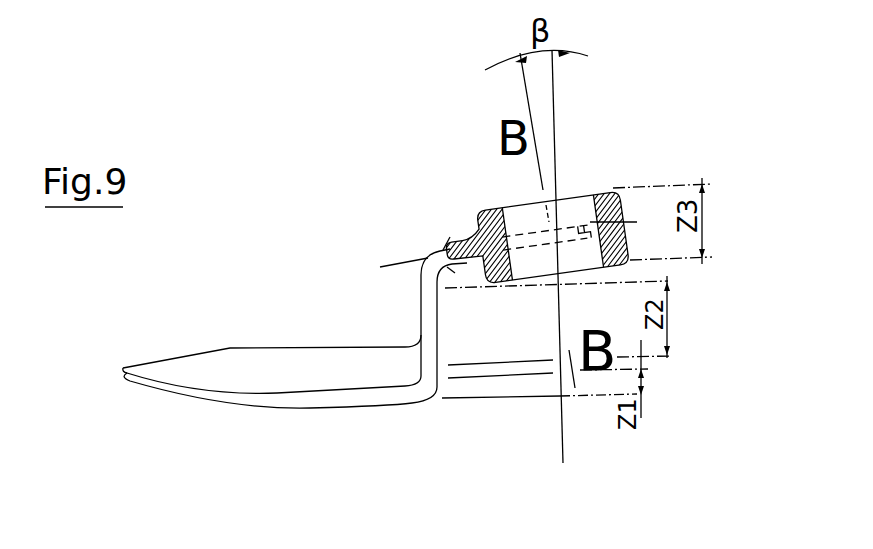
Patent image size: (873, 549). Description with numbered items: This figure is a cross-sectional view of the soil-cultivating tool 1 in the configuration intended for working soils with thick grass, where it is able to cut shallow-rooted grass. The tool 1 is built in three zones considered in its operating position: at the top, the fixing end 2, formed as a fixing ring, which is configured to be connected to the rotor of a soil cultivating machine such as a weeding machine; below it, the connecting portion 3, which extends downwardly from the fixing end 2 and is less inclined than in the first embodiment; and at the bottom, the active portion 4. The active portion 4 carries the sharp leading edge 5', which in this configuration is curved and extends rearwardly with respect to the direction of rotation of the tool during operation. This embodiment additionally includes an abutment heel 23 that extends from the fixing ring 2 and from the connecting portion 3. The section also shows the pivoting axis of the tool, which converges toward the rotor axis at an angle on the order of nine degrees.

The tool 1 is at (641, 175).
The fixing end 2 is at (473, 212).
The abutment heel 23 is at (584, 222).
The connecting portion 3 is at (428, 318).
The active portion 4 is at (320, 370).
The sharp leading edge 5' is at (280, 461).